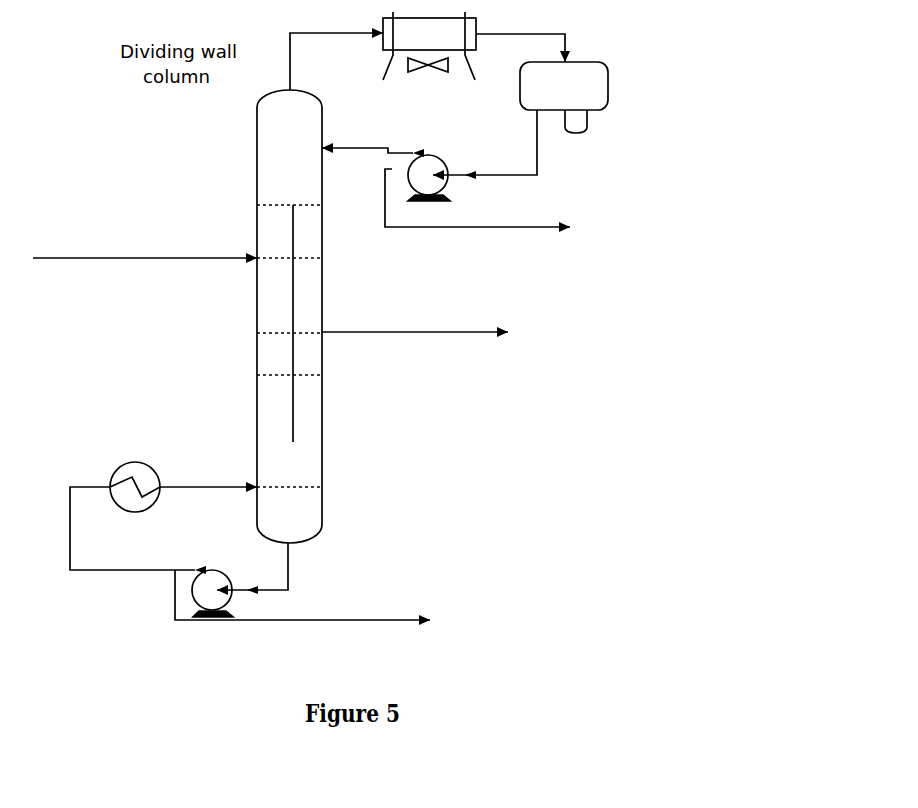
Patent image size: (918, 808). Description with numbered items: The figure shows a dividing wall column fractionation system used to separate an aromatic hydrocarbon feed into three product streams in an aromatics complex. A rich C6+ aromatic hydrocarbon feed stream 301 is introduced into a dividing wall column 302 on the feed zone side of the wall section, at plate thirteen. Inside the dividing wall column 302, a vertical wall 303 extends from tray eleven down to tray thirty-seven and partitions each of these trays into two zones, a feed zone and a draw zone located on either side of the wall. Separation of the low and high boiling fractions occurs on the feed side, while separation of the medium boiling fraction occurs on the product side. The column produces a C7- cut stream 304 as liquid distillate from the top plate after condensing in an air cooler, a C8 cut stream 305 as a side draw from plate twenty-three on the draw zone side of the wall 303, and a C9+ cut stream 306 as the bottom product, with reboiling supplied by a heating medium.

The rich C6+ aromatic hydrocarbon feed stream 301 is at (145, 246).
The dividing wall column 302 is at (323, 470).
The vertical wall 303 is at (293, 383).
The C7- cut stream 304 is at (526, 207).
The C8 cut stream 305 is at (462, 330).
The C9+ cut stream 306 is at (353, 601).